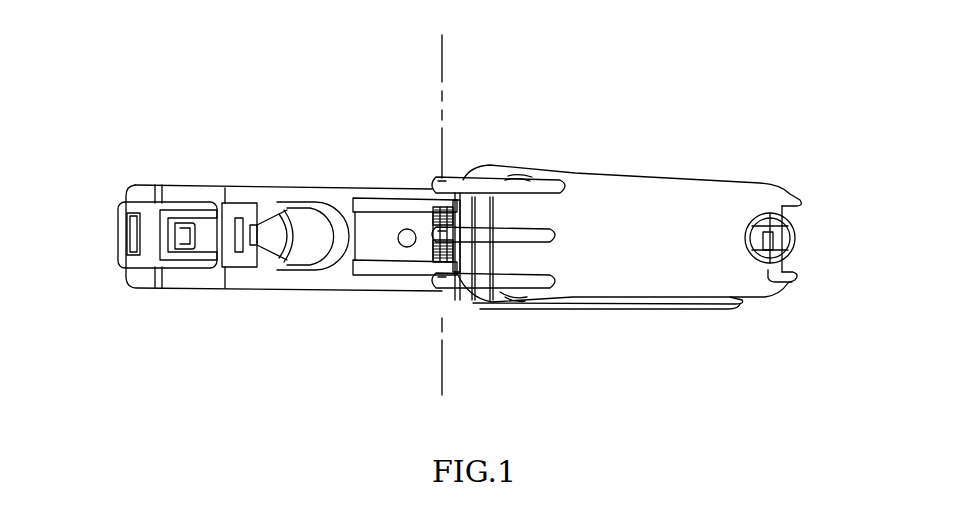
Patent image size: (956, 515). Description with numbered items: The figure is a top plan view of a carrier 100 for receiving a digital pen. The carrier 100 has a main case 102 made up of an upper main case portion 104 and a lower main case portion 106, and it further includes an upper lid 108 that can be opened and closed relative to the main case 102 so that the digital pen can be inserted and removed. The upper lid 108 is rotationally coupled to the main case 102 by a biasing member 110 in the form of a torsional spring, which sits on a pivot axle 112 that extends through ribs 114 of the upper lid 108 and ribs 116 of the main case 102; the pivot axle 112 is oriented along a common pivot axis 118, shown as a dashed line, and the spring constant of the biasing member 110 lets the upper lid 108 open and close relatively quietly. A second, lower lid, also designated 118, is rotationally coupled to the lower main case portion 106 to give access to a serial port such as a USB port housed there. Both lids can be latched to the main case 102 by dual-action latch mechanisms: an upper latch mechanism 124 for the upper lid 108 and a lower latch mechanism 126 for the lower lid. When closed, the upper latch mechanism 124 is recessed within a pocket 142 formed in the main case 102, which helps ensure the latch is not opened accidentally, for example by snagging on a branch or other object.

The carrier 100 is at (206, 90).
The main case 102 is at (337, 168).
The upper main case portion 104 is at (665, 306).
The lower main case portion 106 is at (310, 291).
The upper lid 108 is at (665, 205).
The biasing member 110 is at (433, 248).
The pivot axle 112 is at (440, 206).
The ribs 114 is at (452, 183).
The ribs 116 is at (385, 198).
The pivot axis 118 is at (446, 77).
The upper latch mechanism 124 is at (792, 227).
The lower latch mechanism 126 is at (118, 222).
The pocket 142 is at (798, 264).